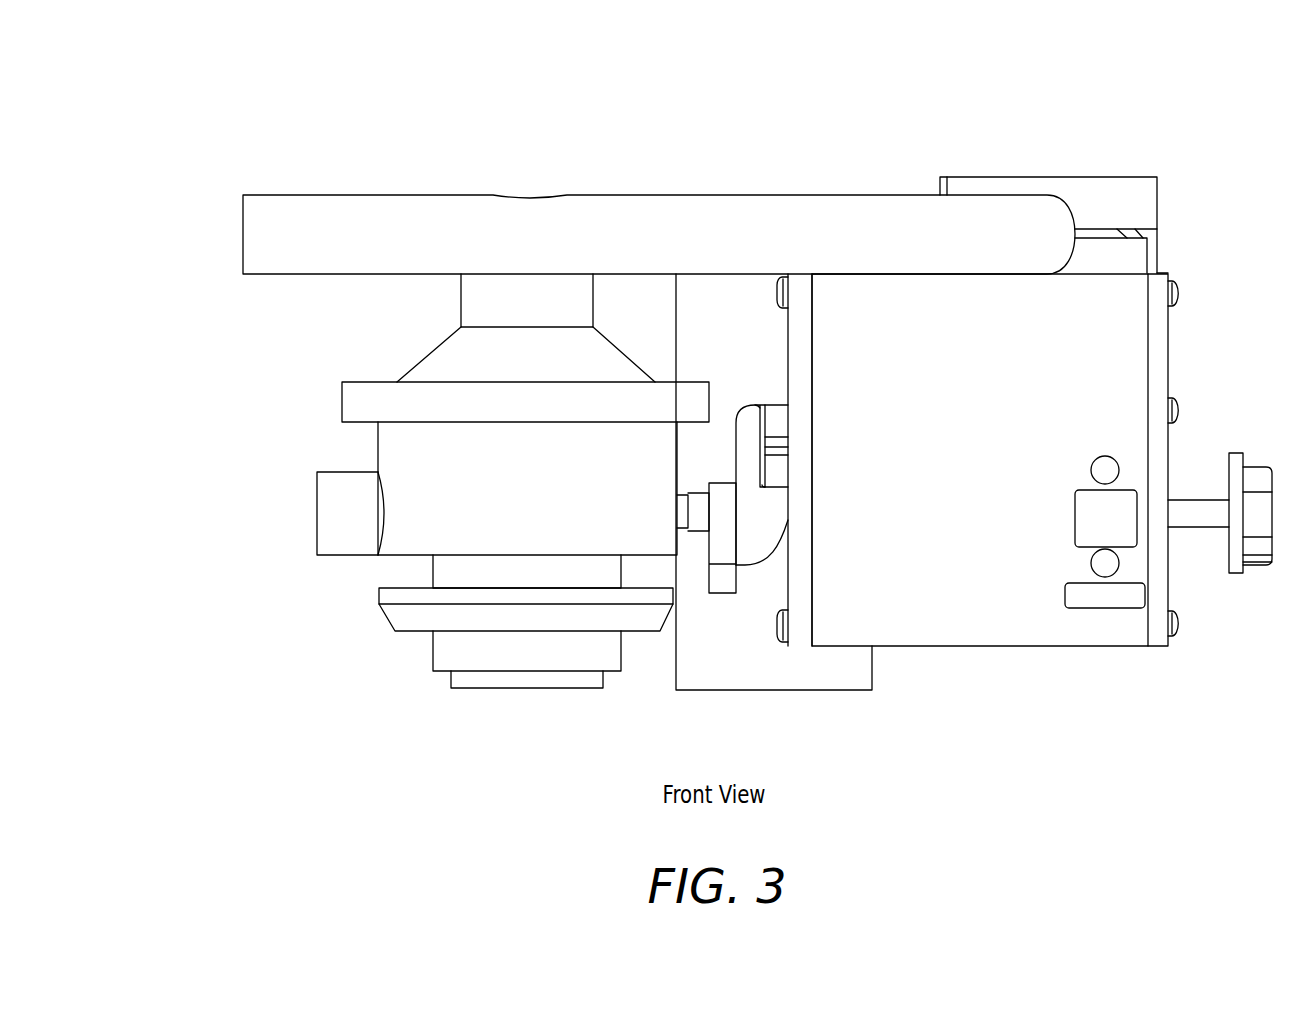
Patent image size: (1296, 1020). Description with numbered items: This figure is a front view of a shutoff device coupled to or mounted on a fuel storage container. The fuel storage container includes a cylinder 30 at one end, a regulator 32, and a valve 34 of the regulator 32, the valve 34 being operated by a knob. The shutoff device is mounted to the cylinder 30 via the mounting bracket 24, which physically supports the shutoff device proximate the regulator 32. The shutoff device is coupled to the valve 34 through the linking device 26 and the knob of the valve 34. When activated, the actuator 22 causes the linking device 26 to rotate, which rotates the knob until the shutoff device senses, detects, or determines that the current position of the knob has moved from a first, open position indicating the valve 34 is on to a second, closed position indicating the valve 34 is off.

The actuator 22 is at (1005, 620).
The mounting bracket 24 is at (1147, 177).
The linking device 26 is at (757, 533).
The cylinder 30 is at (425, 195).
The regulator 32 is at (428, 355).
The valve 34 is at (678, 533).